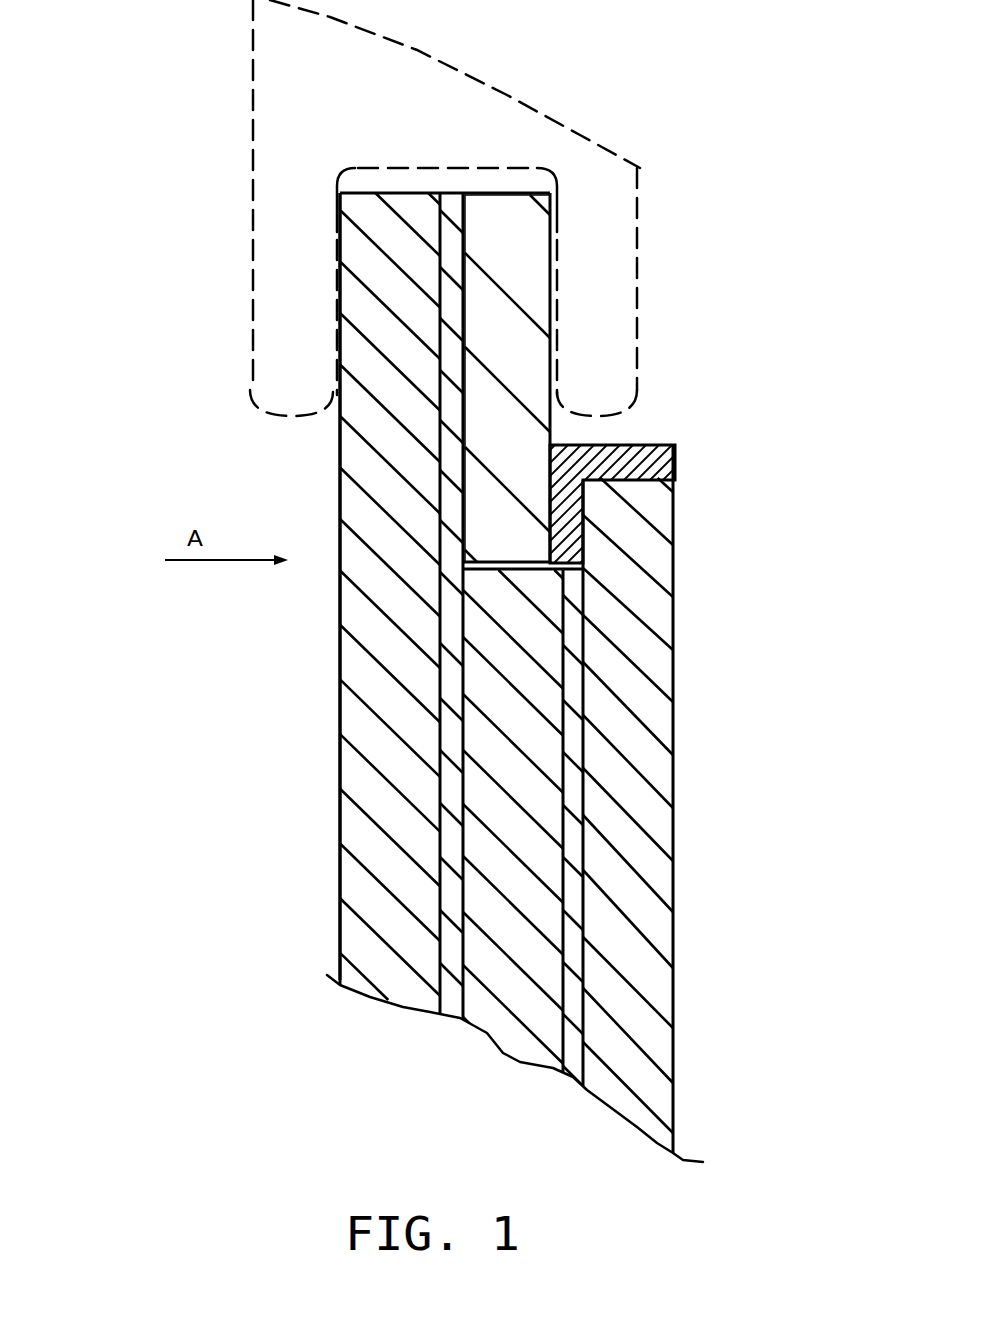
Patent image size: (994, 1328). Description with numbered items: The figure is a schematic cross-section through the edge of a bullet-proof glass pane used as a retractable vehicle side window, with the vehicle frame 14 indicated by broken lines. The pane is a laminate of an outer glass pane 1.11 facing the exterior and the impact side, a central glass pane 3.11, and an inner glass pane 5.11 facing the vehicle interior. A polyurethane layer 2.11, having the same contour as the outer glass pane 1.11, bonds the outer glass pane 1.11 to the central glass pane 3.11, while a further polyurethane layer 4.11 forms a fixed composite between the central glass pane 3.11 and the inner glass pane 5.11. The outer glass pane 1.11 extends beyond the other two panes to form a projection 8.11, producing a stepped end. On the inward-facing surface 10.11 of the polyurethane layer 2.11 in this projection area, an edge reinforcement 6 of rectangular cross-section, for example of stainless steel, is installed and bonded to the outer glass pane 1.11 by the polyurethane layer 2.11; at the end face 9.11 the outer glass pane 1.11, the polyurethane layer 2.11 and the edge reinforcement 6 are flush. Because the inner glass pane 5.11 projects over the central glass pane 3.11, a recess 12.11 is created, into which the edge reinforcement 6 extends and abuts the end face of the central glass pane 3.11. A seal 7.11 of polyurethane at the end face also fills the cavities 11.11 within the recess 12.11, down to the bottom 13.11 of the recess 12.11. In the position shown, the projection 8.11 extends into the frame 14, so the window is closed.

The vehicle frame 14 is at (251, 156).
The end face 9.11 is at (470, 180).
The surface of the polyurethane layer 10.11 is at (478, 292).
The edge reinforcement 6 is at (530, 356).
The recess 12.11 is at (528, 478).
The projection 8.11 is at (365, 278).
The seal 7.11 is at (615, 460).
The cavities 11.11 is at (575, 514).
The bottom of the recess 13.11 is at (572, 552).
The outer glass pane 1.11 is at (345, 612).
The polyurethane layer 2.11 is at (443, 768).
The central glass pane 3.11 is at (550, 660).
The polyurethane layer 4.11 is at (573, 752).
The inner glass pane 5.11 is at (660, 872).